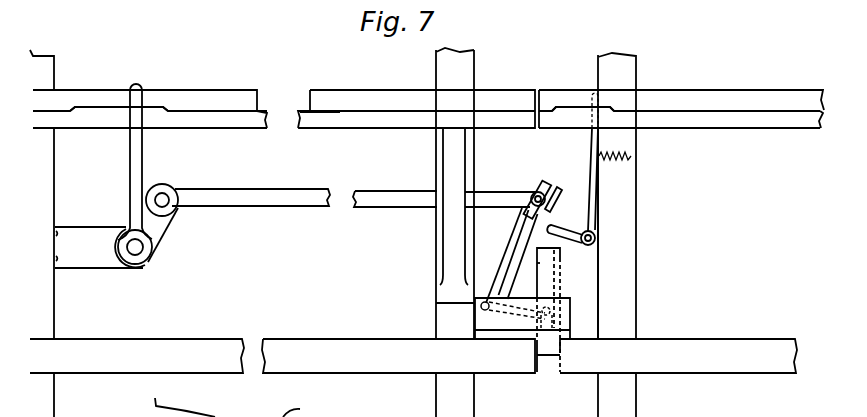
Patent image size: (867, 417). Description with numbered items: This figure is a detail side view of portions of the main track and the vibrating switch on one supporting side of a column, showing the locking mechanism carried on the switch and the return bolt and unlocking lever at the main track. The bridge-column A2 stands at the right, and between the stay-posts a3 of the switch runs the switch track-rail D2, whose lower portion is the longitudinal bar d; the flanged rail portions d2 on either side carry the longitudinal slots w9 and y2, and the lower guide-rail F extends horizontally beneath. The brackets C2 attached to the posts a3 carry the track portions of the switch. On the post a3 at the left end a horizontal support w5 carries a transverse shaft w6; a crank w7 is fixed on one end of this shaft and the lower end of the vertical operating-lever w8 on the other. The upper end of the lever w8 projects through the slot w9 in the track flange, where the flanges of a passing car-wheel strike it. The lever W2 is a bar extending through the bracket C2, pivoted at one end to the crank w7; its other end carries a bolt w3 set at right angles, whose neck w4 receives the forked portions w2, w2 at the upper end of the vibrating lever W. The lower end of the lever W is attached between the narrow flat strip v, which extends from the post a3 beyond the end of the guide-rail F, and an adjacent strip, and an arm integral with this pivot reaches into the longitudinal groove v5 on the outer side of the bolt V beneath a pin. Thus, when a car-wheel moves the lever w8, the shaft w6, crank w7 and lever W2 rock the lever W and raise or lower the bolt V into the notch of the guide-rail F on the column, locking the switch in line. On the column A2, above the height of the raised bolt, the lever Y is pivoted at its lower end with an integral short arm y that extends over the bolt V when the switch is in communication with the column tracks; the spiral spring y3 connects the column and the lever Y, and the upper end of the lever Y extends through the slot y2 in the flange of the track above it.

The stay-post a3 is at (56, 188).
The flange of track-rail d2 is at (197, 90).
The switch track-rail D2 is at (416, 96).
The bar of track-rail d is at (352, 128).
The longitudinal slot w9 is at (85, 110).
The vertical operating-lever w8 is at (142, 160).
The shaft w6 is at (143, 248).
The crank w7 is at (163, 230).
The support w5 is at (99, 247).
The lever W2 is at (253, 198).
The bracket C2 is at (455, 215).
The guide-rail F is at (413, 356).
The bridge-column A2 is at (613, 234).
The bolt V is at (559, 310).
The flat strip v is at (522, 310).
The longitudinal groove v5 is at (538, 263).
The neck w4 is at (516, 316).
The vibrating lever W is at (513, 243).
The forked portions w2 is at (541, 187).
The bolt w3 is at (552, 185).
The lever Y is at (587, 169).
The short arm y is at (571, 232).
The longitudinal slot y2 is at (614, 110).
The spiral spring y3 is at (612, 160).